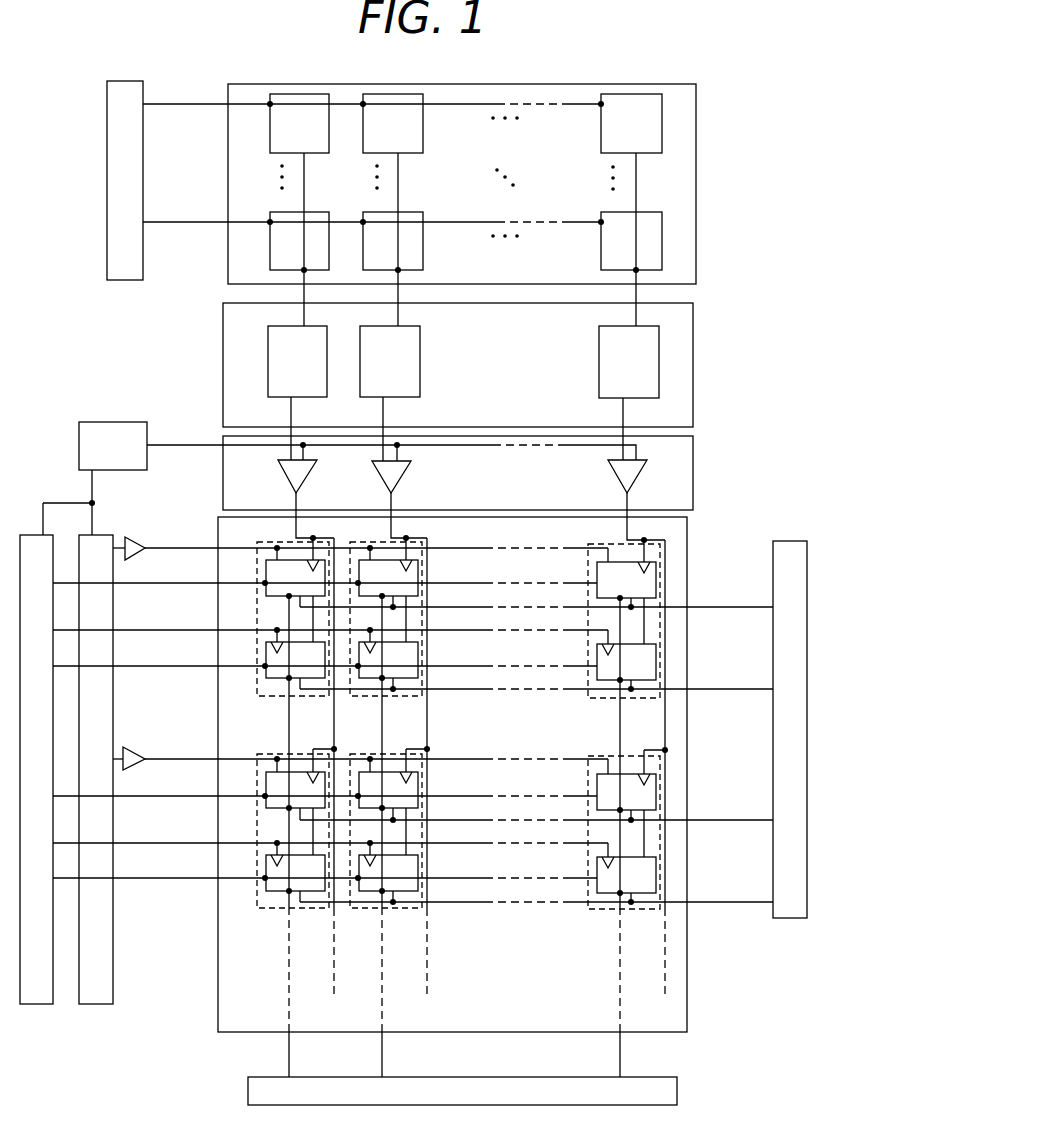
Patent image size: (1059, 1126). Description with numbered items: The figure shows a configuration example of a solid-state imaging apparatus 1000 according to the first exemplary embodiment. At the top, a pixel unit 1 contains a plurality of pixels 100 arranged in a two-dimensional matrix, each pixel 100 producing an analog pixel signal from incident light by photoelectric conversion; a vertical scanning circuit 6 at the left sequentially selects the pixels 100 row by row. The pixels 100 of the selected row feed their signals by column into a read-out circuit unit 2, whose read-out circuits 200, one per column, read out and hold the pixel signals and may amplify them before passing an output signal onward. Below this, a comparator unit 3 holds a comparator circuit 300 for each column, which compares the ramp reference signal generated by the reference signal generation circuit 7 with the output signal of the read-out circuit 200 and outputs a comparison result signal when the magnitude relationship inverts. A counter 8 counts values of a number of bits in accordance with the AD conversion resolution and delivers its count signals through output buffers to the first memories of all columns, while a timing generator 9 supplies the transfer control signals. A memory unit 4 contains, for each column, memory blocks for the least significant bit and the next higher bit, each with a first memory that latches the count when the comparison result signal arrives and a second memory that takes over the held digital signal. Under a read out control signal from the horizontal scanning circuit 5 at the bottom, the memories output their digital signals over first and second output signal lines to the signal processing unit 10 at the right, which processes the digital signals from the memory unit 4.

The solid-state imaging apparatus 1000 is at (656, 64).
The pixel unit 1 is at (697, 178).
The pixel 100 is at (599, 253).
The read-out circuit unit 2 is at (694, 365).
The read-out circuit 200 is at (268, 362).
The comparator unit 3 is at (694, 473).
The comparator circuit 300 is at (288, 478).
The memory unit 4 is at (688, 967).
The horizontal scanning circuit 5 is at (678, 1092).
The vertical scanning circuit 6 is at (106, 178).
The reference signal generation circuit 7 is at (78, 442).
The counter 8 is at (96, 1004).
The timing generator 9 is at (33, 1004).
The signal processing unit (DSP) 10 is at (787, 918).